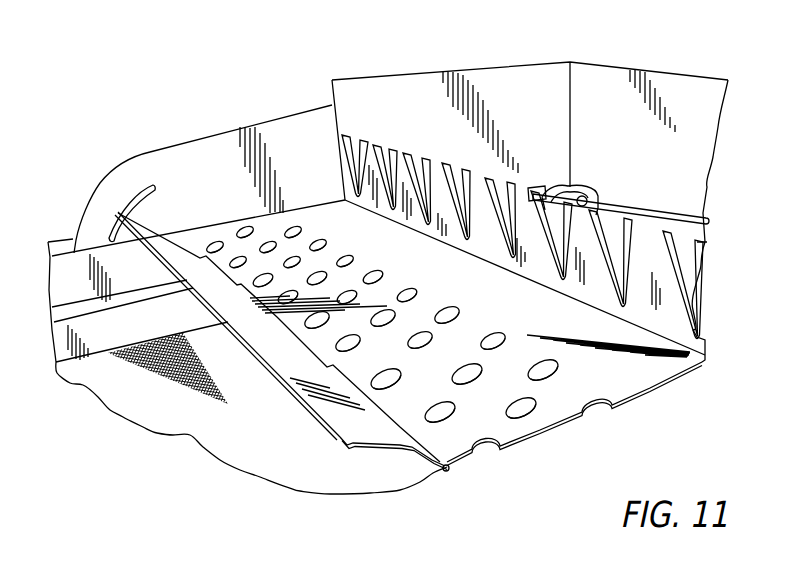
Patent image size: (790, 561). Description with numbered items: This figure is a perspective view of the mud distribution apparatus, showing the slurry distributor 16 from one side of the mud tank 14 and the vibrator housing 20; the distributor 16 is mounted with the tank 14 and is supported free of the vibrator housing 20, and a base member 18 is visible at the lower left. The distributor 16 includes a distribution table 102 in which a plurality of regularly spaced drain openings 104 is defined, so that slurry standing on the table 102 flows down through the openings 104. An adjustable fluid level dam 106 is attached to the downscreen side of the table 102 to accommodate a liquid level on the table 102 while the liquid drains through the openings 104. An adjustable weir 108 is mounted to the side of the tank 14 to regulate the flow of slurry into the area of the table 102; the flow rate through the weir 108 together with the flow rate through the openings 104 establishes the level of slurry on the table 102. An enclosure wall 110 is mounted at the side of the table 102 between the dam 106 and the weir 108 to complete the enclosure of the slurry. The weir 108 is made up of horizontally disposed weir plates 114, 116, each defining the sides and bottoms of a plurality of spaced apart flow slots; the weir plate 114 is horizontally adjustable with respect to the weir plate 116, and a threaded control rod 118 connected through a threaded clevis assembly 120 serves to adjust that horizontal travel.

The mud tank 14 is at (525, 105).
The slurry distributor 16 is at (283, 136).
The base rail 18 is at (225, 392).
The vibrator housing 20 is at (63, 240).
The distribution table 102 is at (411, 333).
The drain openings 104 is at (493, 338).
The adjustable fluid level dam 106 is at (337, 435).
The adjustable weir 108 is at (522, 218).
The enclosure wall 110 is at (142, 160).
The weir plate 114 is at (397, 153).
The weir plate 116 is at (527, 190).
The threaded control rod 118 is at (657, 204).
The threaded clevis assembly 120 is at (580, 188).